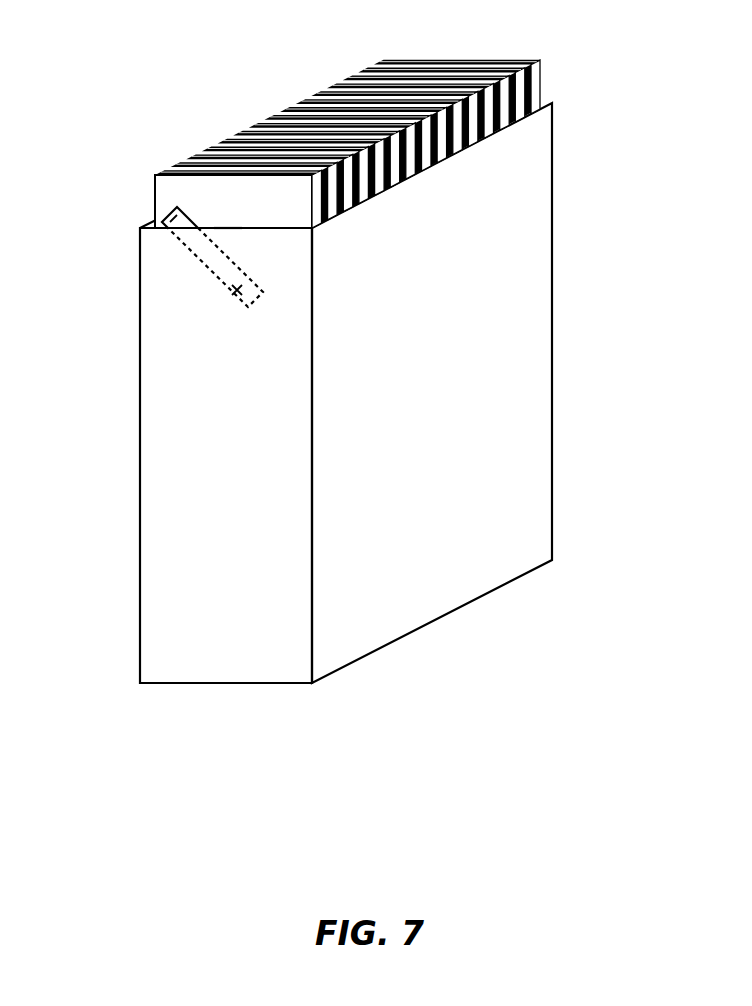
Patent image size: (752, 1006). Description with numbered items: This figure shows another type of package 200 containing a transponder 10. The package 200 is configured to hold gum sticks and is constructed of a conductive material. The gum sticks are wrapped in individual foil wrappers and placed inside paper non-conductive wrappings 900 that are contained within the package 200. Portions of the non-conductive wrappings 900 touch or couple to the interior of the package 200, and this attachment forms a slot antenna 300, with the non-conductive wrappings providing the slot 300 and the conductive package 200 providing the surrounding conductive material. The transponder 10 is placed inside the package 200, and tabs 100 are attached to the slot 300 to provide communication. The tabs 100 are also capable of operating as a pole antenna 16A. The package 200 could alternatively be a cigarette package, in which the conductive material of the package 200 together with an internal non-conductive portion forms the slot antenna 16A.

The transponder 10 is at (210, 257).
The pole antenna 16A is at (229, 222).
The tabs 100 is at (171, 221).
The package 200 is at (522, 250).
The slot antenna 300 is at (213, 227).
The non-conductive wrappings 900 is at (170, 190).